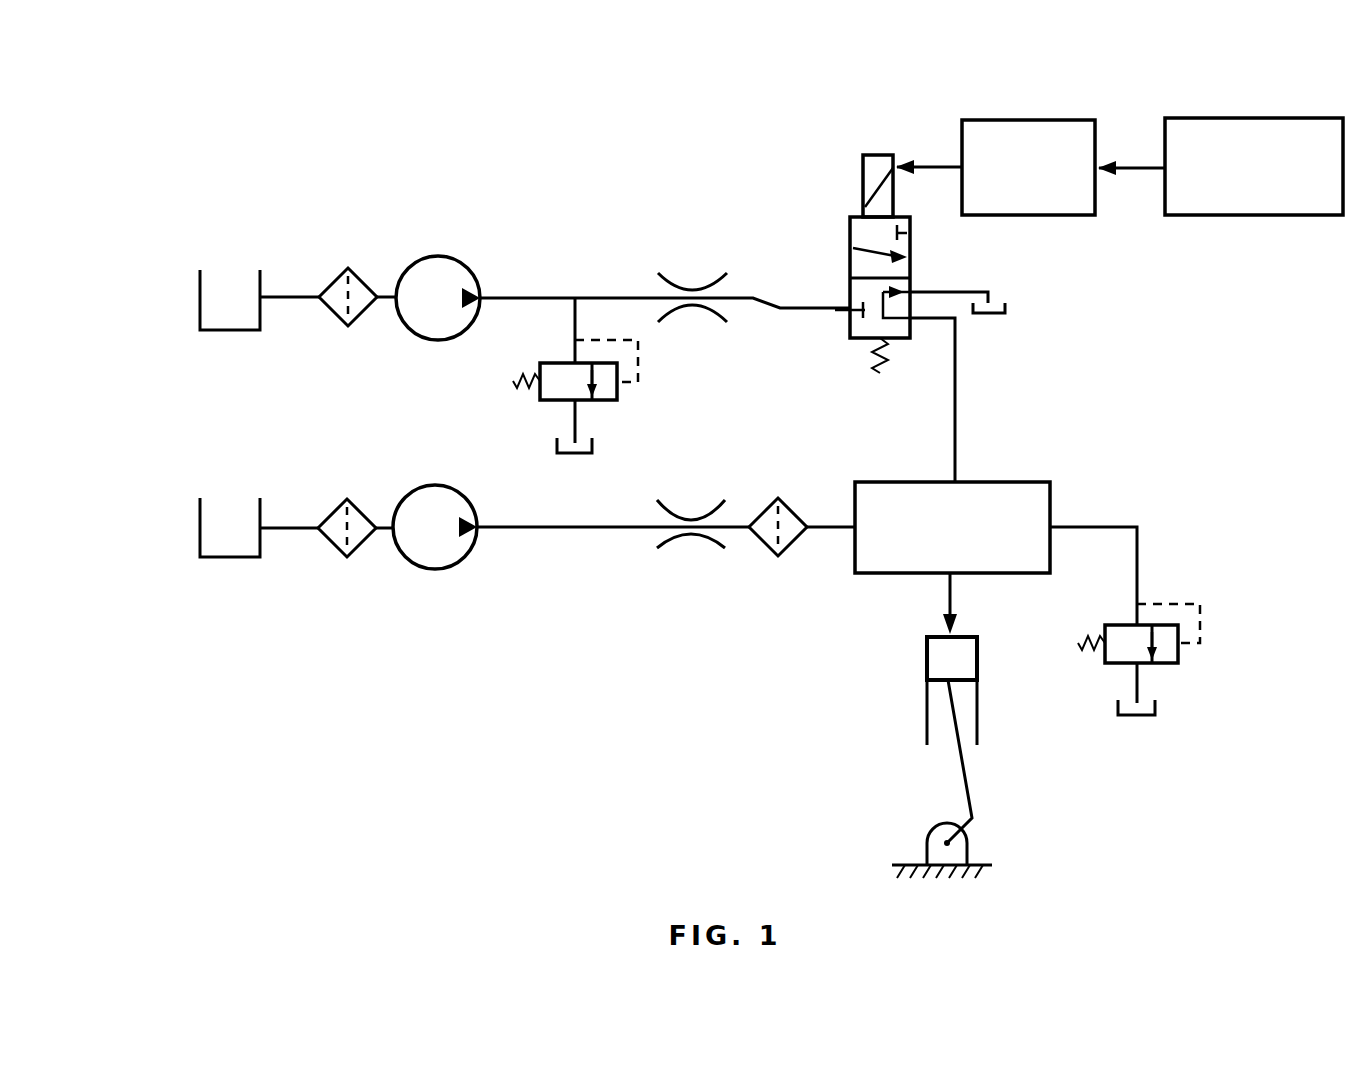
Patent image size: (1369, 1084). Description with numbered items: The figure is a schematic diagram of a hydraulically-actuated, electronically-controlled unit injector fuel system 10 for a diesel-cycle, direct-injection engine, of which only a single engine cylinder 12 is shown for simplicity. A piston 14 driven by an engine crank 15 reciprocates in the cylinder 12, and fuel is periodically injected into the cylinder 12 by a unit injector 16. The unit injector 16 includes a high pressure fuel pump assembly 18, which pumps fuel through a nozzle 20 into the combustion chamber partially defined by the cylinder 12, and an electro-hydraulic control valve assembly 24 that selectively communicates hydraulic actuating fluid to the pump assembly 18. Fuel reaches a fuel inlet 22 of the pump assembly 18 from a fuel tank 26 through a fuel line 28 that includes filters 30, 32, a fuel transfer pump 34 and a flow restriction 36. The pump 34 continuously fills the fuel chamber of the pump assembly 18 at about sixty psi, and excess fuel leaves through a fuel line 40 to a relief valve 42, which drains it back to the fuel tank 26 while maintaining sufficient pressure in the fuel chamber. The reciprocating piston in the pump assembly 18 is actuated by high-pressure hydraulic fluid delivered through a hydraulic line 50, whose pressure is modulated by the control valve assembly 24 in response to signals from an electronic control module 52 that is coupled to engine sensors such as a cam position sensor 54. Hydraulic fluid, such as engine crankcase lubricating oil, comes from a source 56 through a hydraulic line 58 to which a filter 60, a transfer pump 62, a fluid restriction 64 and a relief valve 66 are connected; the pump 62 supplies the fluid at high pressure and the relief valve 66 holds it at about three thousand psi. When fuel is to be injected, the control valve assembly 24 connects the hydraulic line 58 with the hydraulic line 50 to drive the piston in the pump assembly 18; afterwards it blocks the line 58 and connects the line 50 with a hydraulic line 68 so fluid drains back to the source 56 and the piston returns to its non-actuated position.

The fuel injection system 10 is at (373, 197).
The engine cylinder 12 is at (978, 710).
The piston 14 is at (978, 660).
The engine crank 15 is at (967, 848).
The unit injector 16 is at (1115, 372).
The high pressure fuel pump assembly 18 is at (1050, 500).
The nozzle 20 is at (948, 612).
The fuel inlet 22 is at (852, 522).
The electro-hydraulic control valve assembly 24 is at (822, 252).
The fuel tank 26 is at (200, 528).
The fuel line 28 is at (612, 530).
The filter 30 is at (358, 552).
The filter 32 is at (785, 553).
The fuel transfer pump 34 is at (468, 548).
The flow restriction 36 is at (680, 513).
The fuel line 40 is at (1140, 555).
The relief valve 42 is at (1130, 625).
The hydraulic line 50 is at (957, 413).
The electronic control module 52 is at (1050, 120).
The cam position sensor 54 is at (1235, 118).
The source of hydraulic fluid 56 is at (200, 300).
The hydraulic line 58 is at (541, 295).
The filter 60 is at (358, 322).
The transfer pump 62 is at (455, 335).
The fluid restriction 64 is at (682, 315).
The relief valve 66 is at (615, 400).
The hydraulic line 68 is at (940, 292).